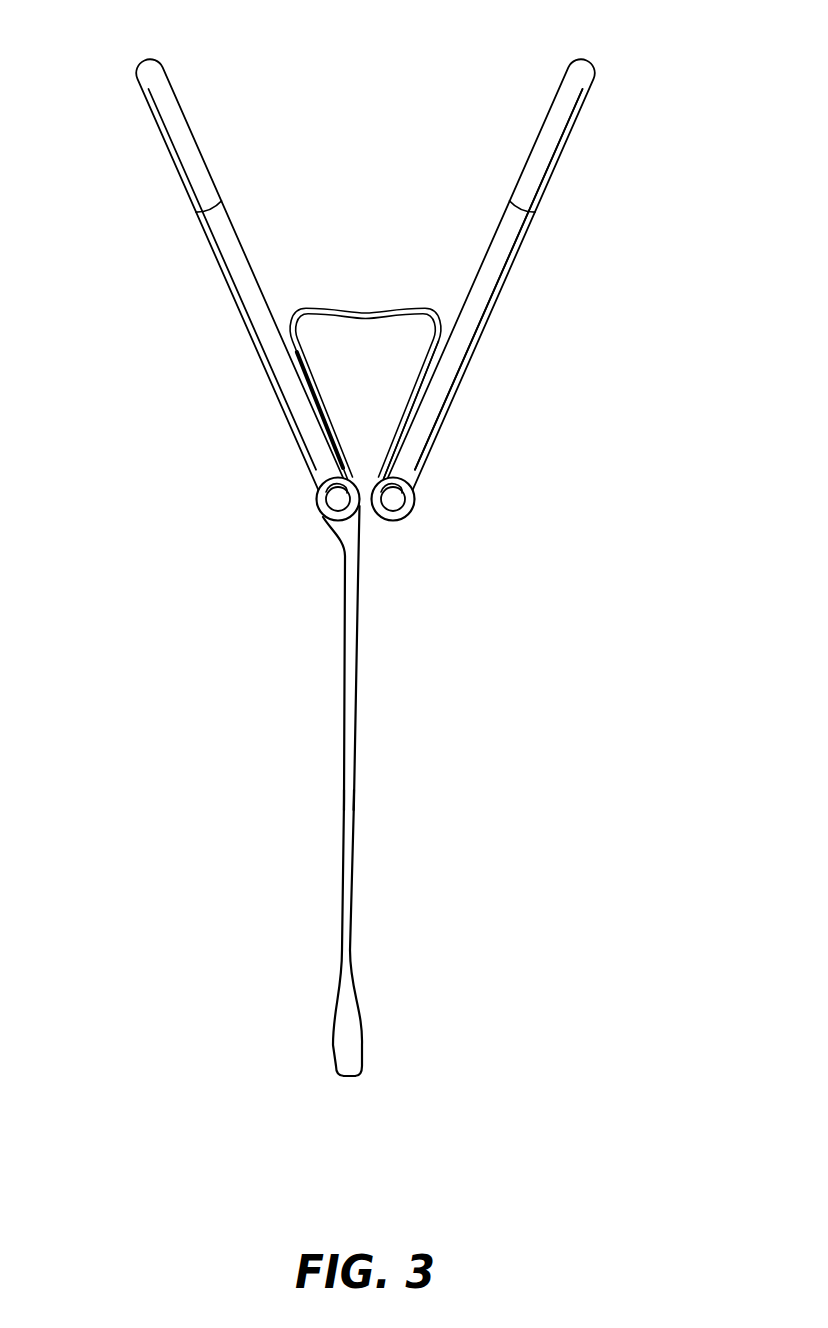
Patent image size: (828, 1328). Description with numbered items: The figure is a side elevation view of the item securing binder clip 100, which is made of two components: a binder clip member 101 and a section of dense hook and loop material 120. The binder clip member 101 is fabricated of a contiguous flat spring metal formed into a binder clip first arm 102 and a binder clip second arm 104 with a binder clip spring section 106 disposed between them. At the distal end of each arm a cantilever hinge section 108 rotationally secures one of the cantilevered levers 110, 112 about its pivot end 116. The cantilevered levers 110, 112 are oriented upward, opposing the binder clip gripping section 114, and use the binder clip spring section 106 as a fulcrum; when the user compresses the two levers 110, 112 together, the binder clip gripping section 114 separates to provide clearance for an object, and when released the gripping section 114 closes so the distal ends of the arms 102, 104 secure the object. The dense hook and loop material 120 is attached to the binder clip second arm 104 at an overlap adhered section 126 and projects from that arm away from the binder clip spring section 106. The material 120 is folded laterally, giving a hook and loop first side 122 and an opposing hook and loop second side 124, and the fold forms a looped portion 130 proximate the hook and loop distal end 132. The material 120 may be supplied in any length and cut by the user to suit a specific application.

The item securing binder clip 100 is at (396, 90).
The binder clip member 101 is at (514, 334).
The binder clip first arm 102 is at (410, 410).
The binder clip second arm 104 is at (317, 413).
The binder clip spring section 106 is at (366, 303).
The cantilever hinge section 108 is at (423, 450).
The cantilevered lever 110 is at (555, 131).
The cantilevered lever 112 is at (177, 132).
The binder clip gripping section 114 is at (373, 524).
The pivot end 116 is at (394, 506).
The dense hook and loop material 120 is at (347, 740).
The hook and loop first side 122 is at (362, 822).
The hook and loop second side 124 is at (338, 822).
The overlap adhered section 126 is at (333, 446).
The looped portion 130 is at (333, 1048).
The hook and loop distal end 132 is at (349, 1088).